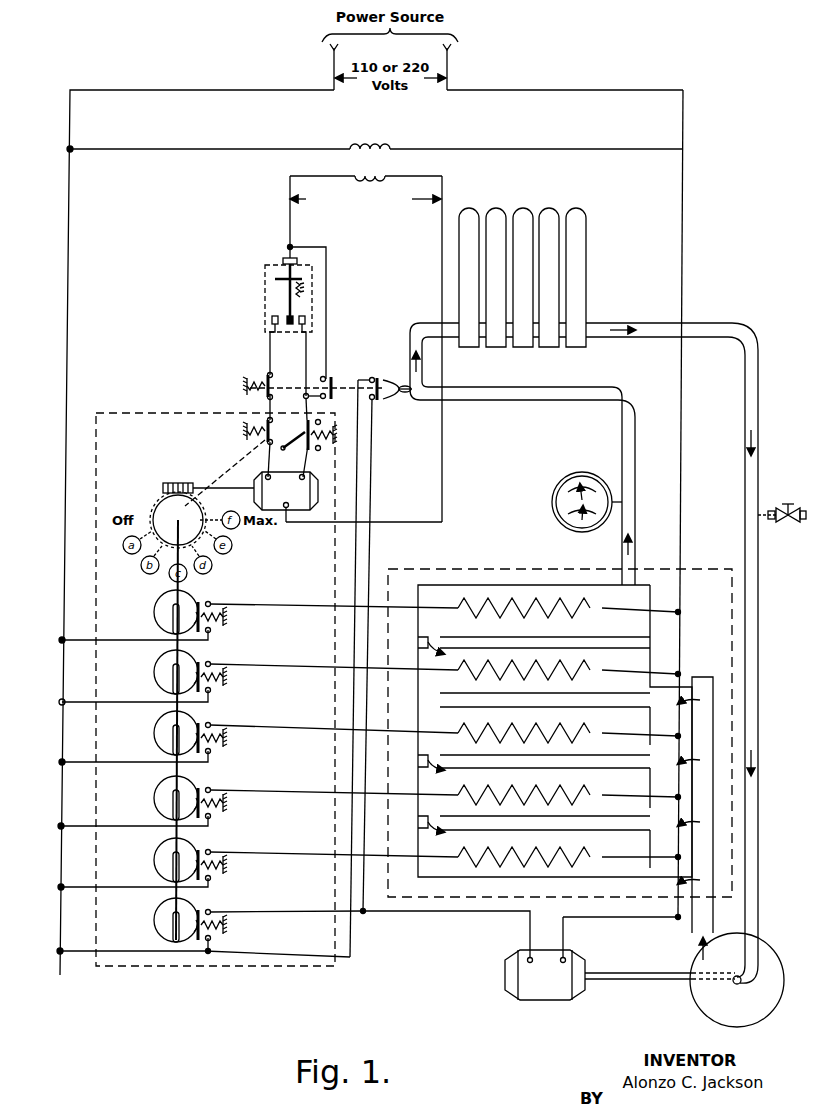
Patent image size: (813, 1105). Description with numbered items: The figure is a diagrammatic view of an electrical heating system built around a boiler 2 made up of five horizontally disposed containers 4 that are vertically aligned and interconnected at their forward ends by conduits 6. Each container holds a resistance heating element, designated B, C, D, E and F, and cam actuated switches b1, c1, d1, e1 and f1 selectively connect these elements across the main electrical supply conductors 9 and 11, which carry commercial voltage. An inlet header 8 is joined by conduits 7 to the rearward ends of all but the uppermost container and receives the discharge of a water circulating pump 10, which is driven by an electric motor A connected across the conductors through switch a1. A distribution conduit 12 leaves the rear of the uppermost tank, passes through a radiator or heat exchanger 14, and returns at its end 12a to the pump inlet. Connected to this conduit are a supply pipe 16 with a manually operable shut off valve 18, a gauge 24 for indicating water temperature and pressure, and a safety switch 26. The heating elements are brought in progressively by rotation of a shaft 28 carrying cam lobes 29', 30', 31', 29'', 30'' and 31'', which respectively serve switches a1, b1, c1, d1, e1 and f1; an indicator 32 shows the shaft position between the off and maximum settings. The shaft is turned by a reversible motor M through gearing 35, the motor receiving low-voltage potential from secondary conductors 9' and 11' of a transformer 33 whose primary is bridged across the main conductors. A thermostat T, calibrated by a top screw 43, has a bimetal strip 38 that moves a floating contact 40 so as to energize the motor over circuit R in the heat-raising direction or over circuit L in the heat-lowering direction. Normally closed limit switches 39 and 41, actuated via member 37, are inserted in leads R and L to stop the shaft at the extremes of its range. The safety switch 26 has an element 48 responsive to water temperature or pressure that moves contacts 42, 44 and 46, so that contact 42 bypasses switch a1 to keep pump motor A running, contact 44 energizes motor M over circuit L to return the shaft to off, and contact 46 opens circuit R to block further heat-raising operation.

The electrical supply conductor 9 is at (358, 543).
The secondary conductor 9' is at (290, 277).
The transformer 33 is at (352, 152).
The top screw 43 is at (292, 260).
The thermostat T is at (265, 300).
The bimetal strip 38 is at (289, 306).
The floating contact 40 is at (288, 337).
The raise circuit R is at (268, 370).
The lower circuit L is at (306, 380).
The normally closed contact 46 is at (262, 392).
The safety switch 26 is at (317, 367).
The normally open contact 44 is at (332, 392).
The normally open contact 42 is at (378, 400).
The temperature/pressure responsive element 48 is at (389, 380).
The normally closed limit switch 39 is at (262, 444).
The normally closed limit switch 41 is at (310, 440).
The actuating member 37 is at (300, 438).
The reversible motor M is at (286, 512).
The gearing 35 is at (178, 483).
The indicator 32 is at (170, 514).
The rotatable shaft 28 is at (180, 650).
The cam lobe 31'' is at (158, 615).
The cam lobe 30'' is at (158, 675).
The cam lobe 29'' is at (158, 736).
The cam lobe 31' is at (157, 800).
The cam lobe 30' is at (156, 862).
The cam lobe 29' is at (156, 922).
The cam actuated switch f1 is at (220, 630).
The cam actuated switch e1 is at (220, 690).
The cam actuated switch d1 is at (220, 750).
The cam actuated switch c1 is at (220, 808).
The cam actuated switch b1 is at (220, 870).
The cam actuated switch a1 is at (220, 929).
The radiator 14 is at (522, 212).
The secondary conductor 11' is at (364, 349).
The distribution conduit 12 is at (636, 500).
The conduit end 12a is at (758, 840).
The electrical supply conductor 11 is at (642, 517).
The gauge 24 is at (552, 496).
The supply pipe 16 is at (789, 506).
The shut off valve 18 is at (786, 520).
The boiler 2 is at (500, 564).
The containers 4 is at (649, 622).
The conduits 6 is at (415, 642).
The conduits 7 is at (664, 738).
The electrical heating element F is at (580, 610).
The electrical heating element E is at (580, 670).
The electrical heating element D is at (580, 732).
The electrical heating element C is at (580, 794).
The electrical heating element B is at (580, 855).
The inlet header 8 is at (715, 694).
The water circulating pump 10 is at (704, 992).
The electric motor A is at (598, 958).